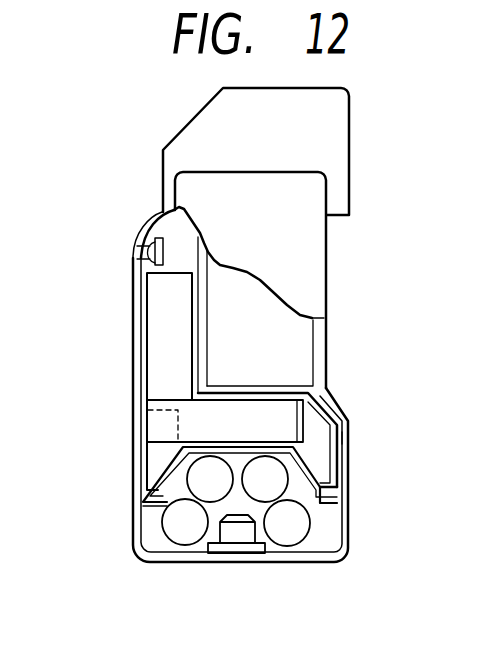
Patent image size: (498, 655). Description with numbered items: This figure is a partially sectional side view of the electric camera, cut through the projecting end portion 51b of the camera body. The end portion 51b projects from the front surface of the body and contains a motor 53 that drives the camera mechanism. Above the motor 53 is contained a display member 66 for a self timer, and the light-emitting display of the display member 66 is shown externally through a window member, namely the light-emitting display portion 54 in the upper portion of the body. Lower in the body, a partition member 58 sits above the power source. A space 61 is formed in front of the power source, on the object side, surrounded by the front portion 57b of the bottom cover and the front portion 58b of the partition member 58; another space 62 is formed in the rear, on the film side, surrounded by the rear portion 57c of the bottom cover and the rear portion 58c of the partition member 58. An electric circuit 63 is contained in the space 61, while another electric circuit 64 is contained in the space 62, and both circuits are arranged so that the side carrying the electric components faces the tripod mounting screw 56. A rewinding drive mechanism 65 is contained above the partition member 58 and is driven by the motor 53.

The end portion 51b is at (137, 340).
The motor 53 is at (155, 313).
The light-emitting display portion 54 is at (134, 247).
The tripod mounting screw 56 is at (238, 545).
The front portion of the bottom cover 57b is at (140, 503).
The rear portion of the bottom cover 57c is at (343, 473).
The partition member 58 is at (320, 442).
The front portion of the partition member 58b is at (180, 500).
The rear portion of the partition member 58c is at (300, 515).
The space 61 is at (150, 492).
The space 62 is at (337, 498).
The electric circuit 63 is at (157, 455).
The electric circuit 64 is at (345, 428).
The rewinding drive mechanism 65 is at (257, 410).
The display member 66 is at (150, 253).